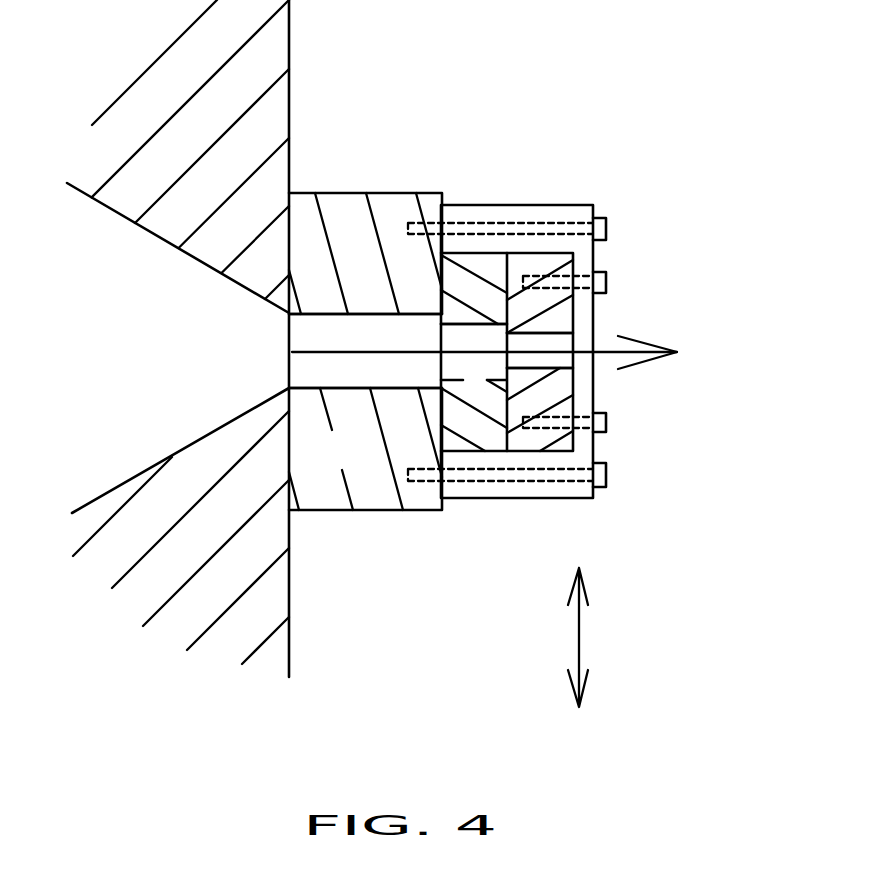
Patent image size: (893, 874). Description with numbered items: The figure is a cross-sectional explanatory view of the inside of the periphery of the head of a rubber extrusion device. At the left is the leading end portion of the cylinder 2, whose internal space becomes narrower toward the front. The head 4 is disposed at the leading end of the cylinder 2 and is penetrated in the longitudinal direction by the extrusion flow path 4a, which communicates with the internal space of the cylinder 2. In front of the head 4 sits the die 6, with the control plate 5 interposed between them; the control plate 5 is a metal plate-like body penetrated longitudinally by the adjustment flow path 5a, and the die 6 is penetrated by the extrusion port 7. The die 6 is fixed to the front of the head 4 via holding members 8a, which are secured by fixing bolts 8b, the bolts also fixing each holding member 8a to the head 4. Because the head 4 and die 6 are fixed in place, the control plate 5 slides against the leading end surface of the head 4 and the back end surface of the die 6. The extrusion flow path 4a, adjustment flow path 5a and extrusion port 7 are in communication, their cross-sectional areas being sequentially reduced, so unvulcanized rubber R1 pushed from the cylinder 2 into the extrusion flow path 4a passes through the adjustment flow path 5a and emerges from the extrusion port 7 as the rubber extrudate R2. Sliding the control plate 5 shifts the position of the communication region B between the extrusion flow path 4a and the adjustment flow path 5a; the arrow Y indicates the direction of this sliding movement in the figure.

The cylinder 2 is at (278, 57).
The head 4 is at (383, 193).
The extrusion flow path 4a is at (380, 400).
The control plate 5 is at (471, 253).
The adjustment flow path 5a is at (480, 333).
The die 6 is at (542, 253).
The extrusion port 7 is at (540, 340).
The holding member 8a is at (582, 263).
The fixing bolt 8b is at (606, 480).
The communication region B is at (443, 325).
The unvulcanized rubber R1 is at (459, 352).
The rubber extrudate R2 is at (675, 352).
The Y direction Y is at (587, 637).